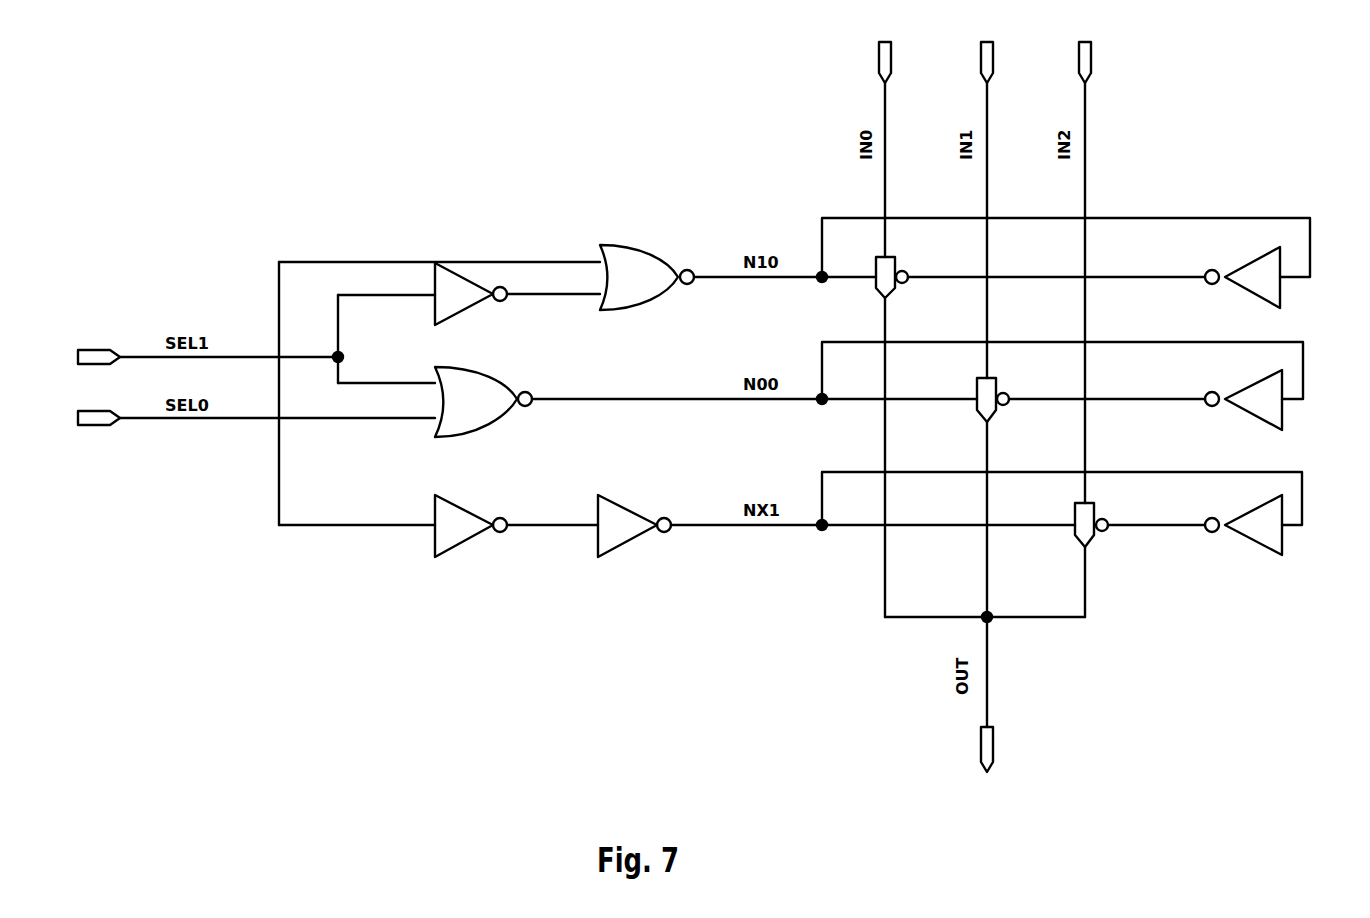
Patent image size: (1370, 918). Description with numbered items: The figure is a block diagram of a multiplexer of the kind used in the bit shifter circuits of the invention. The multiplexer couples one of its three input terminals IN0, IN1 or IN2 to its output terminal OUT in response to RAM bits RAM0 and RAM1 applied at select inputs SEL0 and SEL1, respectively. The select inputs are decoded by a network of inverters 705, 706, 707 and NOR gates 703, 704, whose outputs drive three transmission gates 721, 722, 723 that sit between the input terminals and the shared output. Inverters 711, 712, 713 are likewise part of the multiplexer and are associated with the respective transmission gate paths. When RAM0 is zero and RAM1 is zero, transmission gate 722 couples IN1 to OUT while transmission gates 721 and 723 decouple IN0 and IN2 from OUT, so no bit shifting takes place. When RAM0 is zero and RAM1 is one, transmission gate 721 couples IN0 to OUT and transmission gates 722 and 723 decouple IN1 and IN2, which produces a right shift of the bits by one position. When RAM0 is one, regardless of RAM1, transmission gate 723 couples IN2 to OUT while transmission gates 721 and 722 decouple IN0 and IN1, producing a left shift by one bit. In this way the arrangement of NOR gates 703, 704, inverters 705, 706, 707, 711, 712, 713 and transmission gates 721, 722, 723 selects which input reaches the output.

The NOR gate 703 is at (490, 430).
The NOR gate 704 is at (618, 244).
The inverter 705 is at (466, 310).
The inverter 706 is at (466, 540).
The inverter 707 is at (631, 540).
The inverter 711 is at (1283, 292).
The inverter 712 is at (1283, 416).
The inverter 713 is at (1283, 540).
The transmission gate 721 is at (898, 292).
The transmission gate 722 is at (996, 412).
The transmission gate 723 is at (1096, 538).